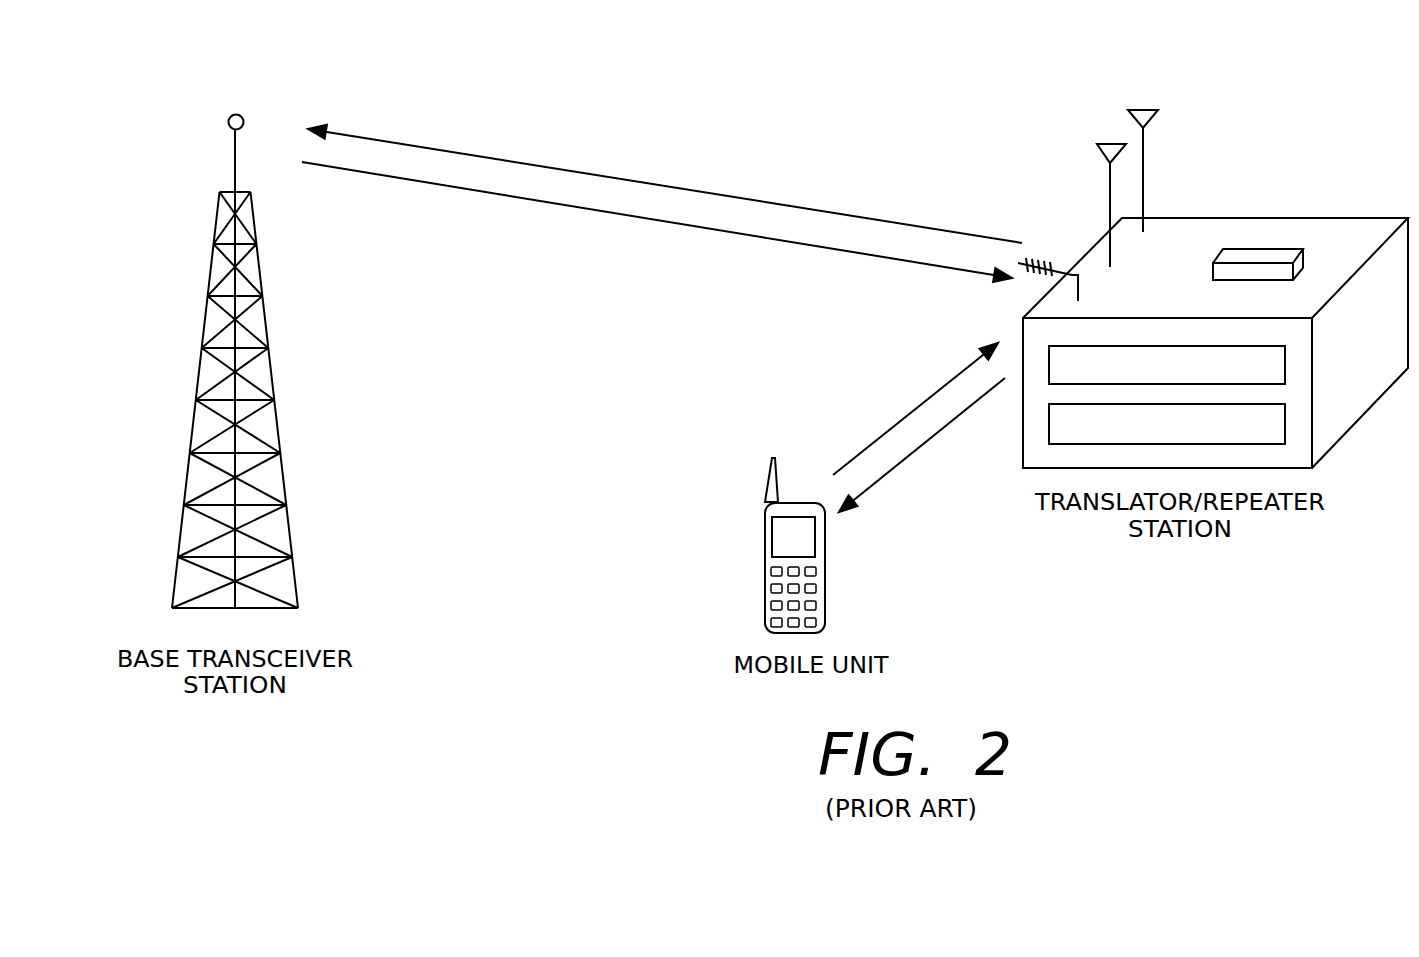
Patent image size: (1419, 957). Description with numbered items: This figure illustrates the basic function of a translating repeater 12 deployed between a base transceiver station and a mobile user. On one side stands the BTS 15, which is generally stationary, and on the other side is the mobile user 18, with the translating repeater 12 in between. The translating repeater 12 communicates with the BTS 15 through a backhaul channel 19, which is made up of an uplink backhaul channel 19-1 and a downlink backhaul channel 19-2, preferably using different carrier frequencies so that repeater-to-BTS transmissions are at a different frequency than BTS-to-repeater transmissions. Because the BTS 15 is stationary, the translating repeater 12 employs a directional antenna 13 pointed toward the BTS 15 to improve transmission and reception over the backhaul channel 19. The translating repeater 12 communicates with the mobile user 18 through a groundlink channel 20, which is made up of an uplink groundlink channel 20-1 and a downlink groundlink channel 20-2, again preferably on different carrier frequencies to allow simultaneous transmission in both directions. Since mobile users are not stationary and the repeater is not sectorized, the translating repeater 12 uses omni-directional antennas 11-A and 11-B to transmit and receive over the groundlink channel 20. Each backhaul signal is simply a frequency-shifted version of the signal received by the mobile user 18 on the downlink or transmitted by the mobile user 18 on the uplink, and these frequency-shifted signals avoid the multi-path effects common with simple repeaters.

The omni-directional antenna 11-A is at (1100, 145).
The omni-directional antenna 11-B is at (1136, 110).
The translating repeater 12 is at (1233, 217).
The directional antenna 13 is at (1042, 258).
The BTS 15 is at (278, 425).
The mobile user 18 is at (765, 563).
The backhaul channel 19 is at (662, 191).
The uplink backhaul channel 19-1 is at (795, 205).
The downlink backhaul channel 19-2 is at (750, 235).
The groundlink channel 20 is at (902, 445).
The uplink groundlink channel 20-1 is at (922, 400).
The downlink groundlink channel 20-2 is at (897, 467).